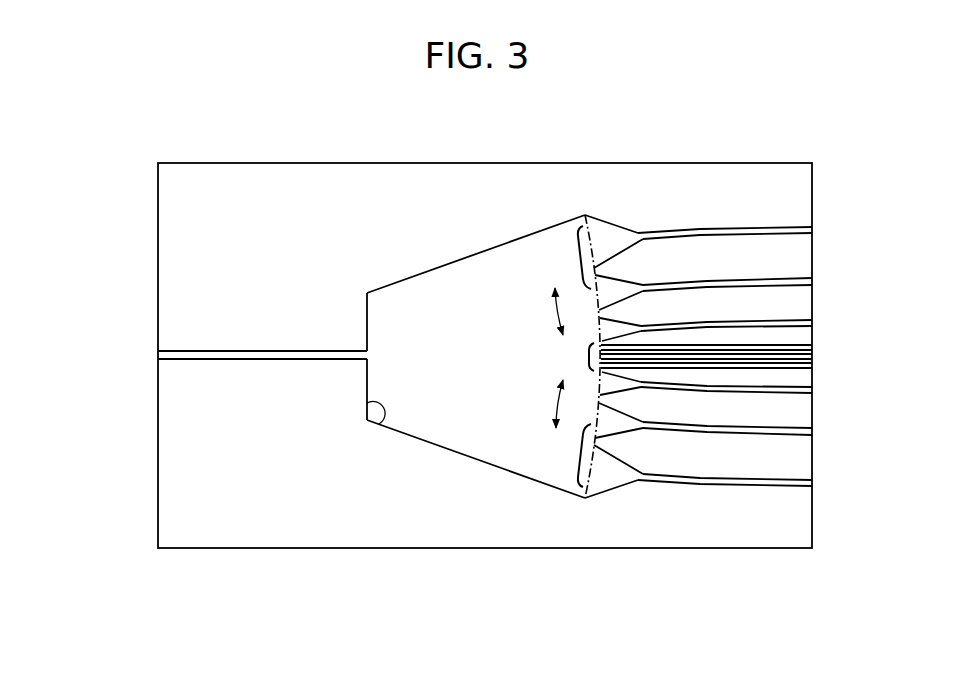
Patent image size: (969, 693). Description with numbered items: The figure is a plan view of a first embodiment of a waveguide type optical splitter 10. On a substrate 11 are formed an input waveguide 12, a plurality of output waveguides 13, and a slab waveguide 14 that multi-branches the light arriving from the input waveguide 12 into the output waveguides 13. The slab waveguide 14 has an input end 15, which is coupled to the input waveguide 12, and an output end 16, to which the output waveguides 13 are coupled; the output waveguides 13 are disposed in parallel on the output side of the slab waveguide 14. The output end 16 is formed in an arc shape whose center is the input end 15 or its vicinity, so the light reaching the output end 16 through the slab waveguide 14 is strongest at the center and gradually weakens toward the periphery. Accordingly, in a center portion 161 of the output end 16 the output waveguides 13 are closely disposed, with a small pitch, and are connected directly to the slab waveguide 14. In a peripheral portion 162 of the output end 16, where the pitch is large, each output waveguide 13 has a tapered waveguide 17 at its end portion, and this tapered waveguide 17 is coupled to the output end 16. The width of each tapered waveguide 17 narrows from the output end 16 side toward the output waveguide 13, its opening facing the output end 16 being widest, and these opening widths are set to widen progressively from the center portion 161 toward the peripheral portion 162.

The waveguide type optical splitter 10 is at (389, 161).
The substrate 11 is at (178, 520).
The input waveguide 12 is at (178, 351).
The output waveguide 13 is at (710, 227).
The slab waveguide 14 is at (470, 358).
The input end 15 is at (377, 423).
The output end 16 is at (585, 500).
The center portion 161 is at (590, 352).
The peripheral portion 162 is at (580, 284).
The tapered waveguide 17 is at (612, 225).